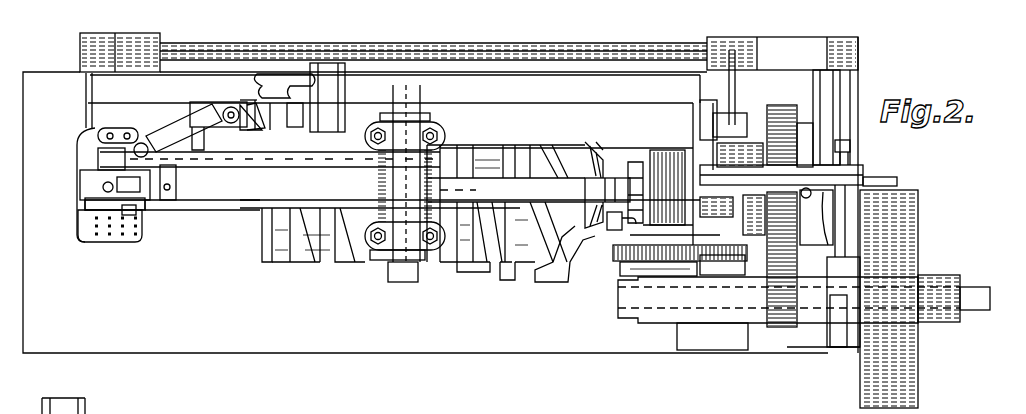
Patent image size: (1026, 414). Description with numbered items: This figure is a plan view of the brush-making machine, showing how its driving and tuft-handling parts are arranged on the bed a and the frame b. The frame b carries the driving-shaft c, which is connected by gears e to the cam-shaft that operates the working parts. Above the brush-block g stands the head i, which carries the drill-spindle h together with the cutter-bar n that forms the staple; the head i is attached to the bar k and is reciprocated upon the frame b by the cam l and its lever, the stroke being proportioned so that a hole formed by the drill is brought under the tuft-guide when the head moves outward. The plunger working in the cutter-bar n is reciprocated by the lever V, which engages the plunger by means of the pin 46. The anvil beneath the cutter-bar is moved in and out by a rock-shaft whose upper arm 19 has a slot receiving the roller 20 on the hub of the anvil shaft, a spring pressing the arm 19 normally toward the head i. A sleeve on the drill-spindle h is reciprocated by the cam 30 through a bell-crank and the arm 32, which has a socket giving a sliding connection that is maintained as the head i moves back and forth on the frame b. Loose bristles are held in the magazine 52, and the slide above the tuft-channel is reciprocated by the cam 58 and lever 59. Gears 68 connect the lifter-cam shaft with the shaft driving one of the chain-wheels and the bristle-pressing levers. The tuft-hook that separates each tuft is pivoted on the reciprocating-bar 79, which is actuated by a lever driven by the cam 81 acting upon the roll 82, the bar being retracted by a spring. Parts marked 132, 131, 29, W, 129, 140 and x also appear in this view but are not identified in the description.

The bed a is at (440, 214).
The shaft 132 is at (360, 56).
The housing 131 is at (855, 88).
The frame b is at (588, 122).
The arm 19 is at (168, 125).
The roller 20 is at (128, 130).
The head i is at (90, 184).
The arm 32 is at (353, 158).
The drill-spindle h is at (100, 200).
The brush-block g is at (114, 242).
The pin 46 is at (138, 215).
The lever V is at (200, 211).
The post with clamps 29 is at (412, 86).
The cam 30 is at (293, 263).
The bar k is at (516, 188).
The bracket W is at (446, 264).
The cam l is at (474, 264).
The cam 58 is at (527, 263).
The lever 59 is at (600, 237).
The magazine 52 is at (668, 150).
The gears 68 is at (615, 260).
The driving-shaft c is at (975, 287).
The gears e is at (784, 110).
The cam 81 is at (848, 149).
The roll 82 is at (858, 165).
The reciprocating-bar 79 is at (899, 181).
The bearing block 129 is at (898, 235).
The gear wheel 140 is at (850, 296).
The cutter-bar n is at (47, 402).
The part x is at (293, 403).